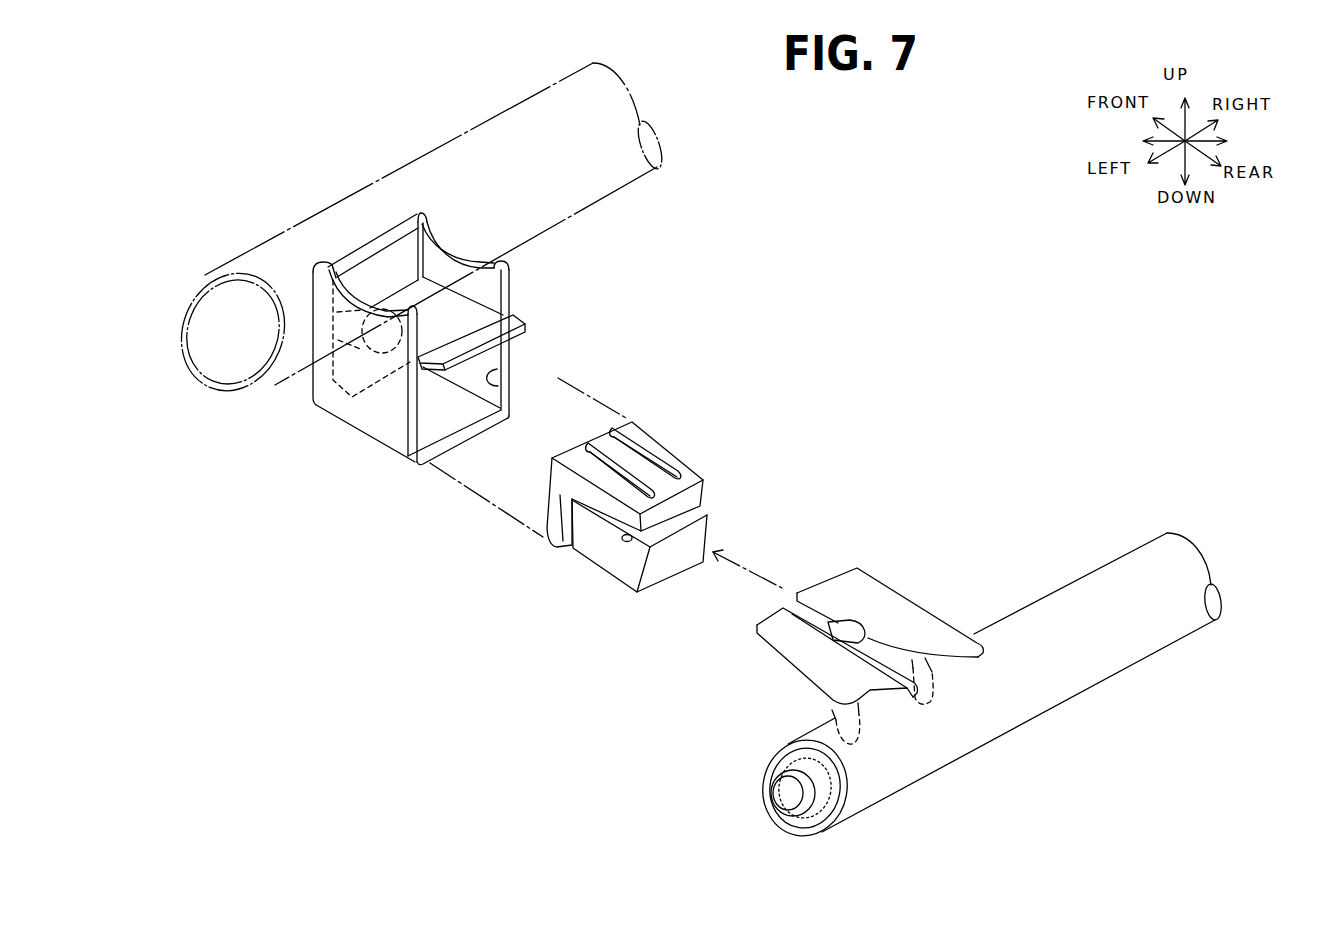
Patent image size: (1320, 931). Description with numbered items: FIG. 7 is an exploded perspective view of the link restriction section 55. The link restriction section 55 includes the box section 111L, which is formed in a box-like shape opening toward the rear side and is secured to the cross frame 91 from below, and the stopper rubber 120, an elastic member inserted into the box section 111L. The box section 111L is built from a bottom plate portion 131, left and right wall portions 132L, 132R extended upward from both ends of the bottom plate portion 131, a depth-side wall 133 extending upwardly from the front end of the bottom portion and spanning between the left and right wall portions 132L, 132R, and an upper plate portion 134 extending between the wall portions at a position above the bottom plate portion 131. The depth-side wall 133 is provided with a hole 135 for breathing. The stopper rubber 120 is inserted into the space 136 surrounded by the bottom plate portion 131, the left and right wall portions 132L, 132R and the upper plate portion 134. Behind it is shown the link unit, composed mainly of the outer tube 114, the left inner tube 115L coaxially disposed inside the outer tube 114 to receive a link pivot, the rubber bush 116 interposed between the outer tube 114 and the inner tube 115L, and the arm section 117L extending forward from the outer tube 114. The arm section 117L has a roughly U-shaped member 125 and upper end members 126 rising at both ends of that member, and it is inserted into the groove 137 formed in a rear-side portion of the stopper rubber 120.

The cross frame 91 is at (420, 157).
The hole for breathing 135 is at (333, 315).
The upper plate portion 134 is at (514, 318).
The right wall portion 132R is at (507, 351).
The space 136 is at (498, 372).
The depth-side wall 133 is at (312, 388).
The left wall portion 132L is at (335, 403).
The box section 111L is at (411, 373).
The bottom plate portion 131 is at (443, 427).
The link restriction section 55 is at (412, 591).
The stopper rubber 120 is at (594, 555).
The groove 137 is at (627, 541).
The arm section 117L is at (870, 597).
The roughly U-shaped member 125 is at (822, 597).
The upper end members 126 is at (868, 672).
The outer tube 114 is at (1025, 692).
The left inner tube 115L is at (772, 797).
The rubber bush 116 is at (799, 822).